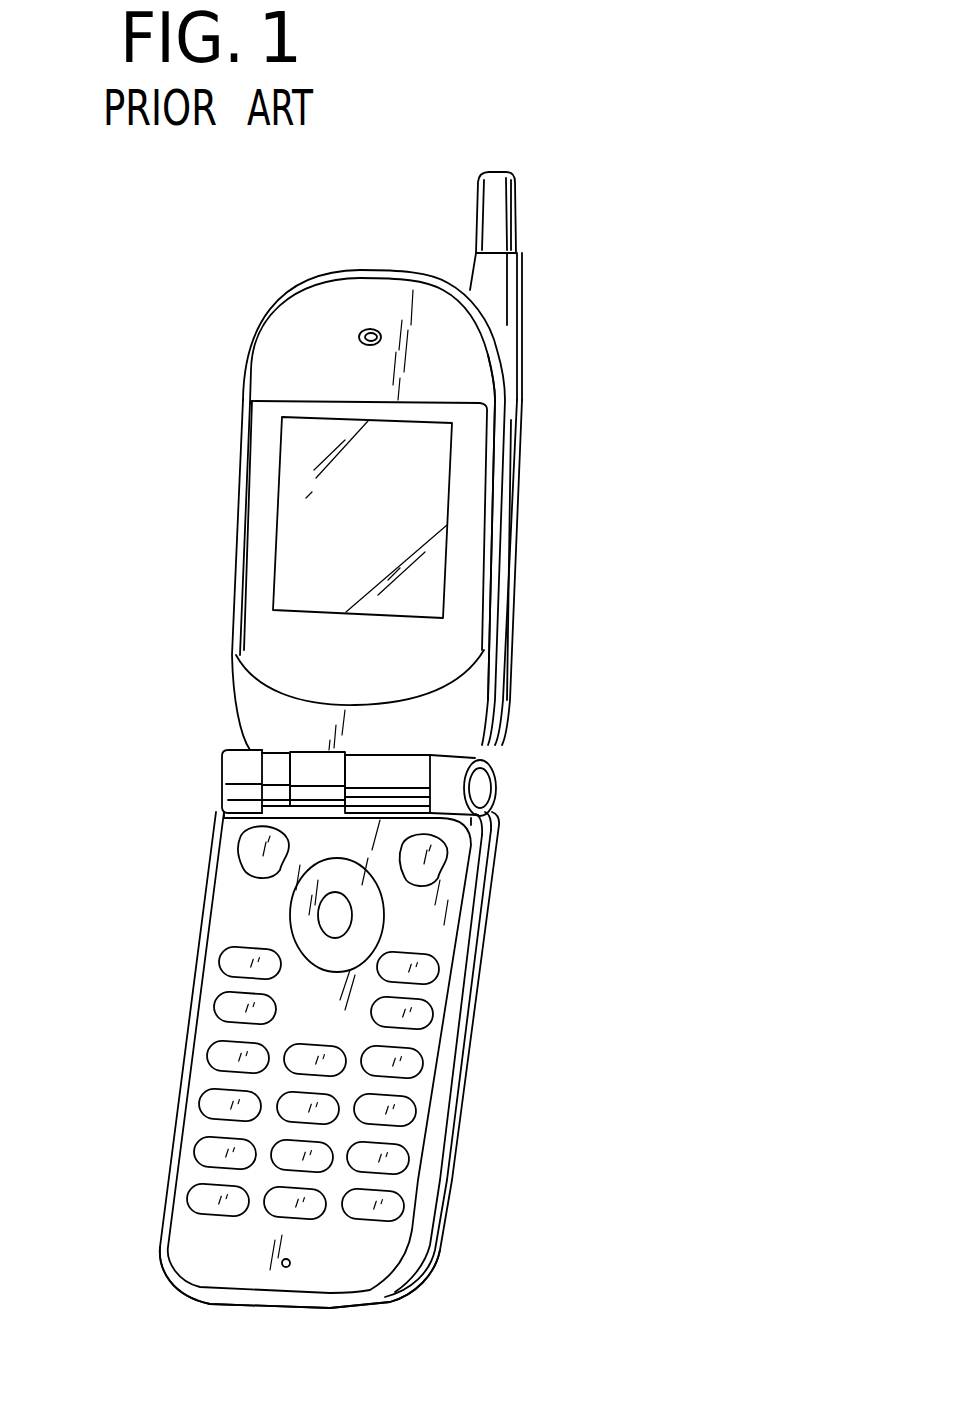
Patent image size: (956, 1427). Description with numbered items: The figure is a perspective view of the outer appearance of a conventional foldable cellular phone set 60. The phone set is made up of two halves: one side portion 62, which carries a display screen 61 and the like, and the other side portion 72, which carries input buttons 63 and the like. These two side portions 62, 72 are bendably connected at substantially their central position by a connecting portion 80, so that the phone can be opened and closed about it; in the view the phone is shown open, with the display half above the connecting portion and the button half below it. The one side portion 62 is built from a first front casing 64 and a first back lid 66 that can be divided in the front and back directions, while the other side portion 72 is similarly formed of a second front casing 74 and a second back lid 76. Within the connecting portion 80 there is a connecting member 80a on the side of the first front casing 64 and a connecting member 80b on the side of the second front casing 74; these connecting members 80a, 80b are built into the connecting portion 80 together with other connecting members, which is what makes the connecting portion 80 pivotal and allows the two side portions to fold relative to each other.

The foldable cellular phone set 60 is at (613, 307).
The display screen 61 is at (305, 525).
The one side portion 62 is at (533, 602).
The input buttons 63 is at (227, 1057).
The first front casing 64 is at (278, 365).
The first back lid 66 is at (503, 717).
The other side portion 72 is at (490, 1002).
The second front casing 74 is at (235, 925).
The second back lid 76 is at (445, 1207).
The connecting portion 80 is at (220, 777).
The connecting member 80a is at (373, 769).
The connecting member 80b is at (323, 773).